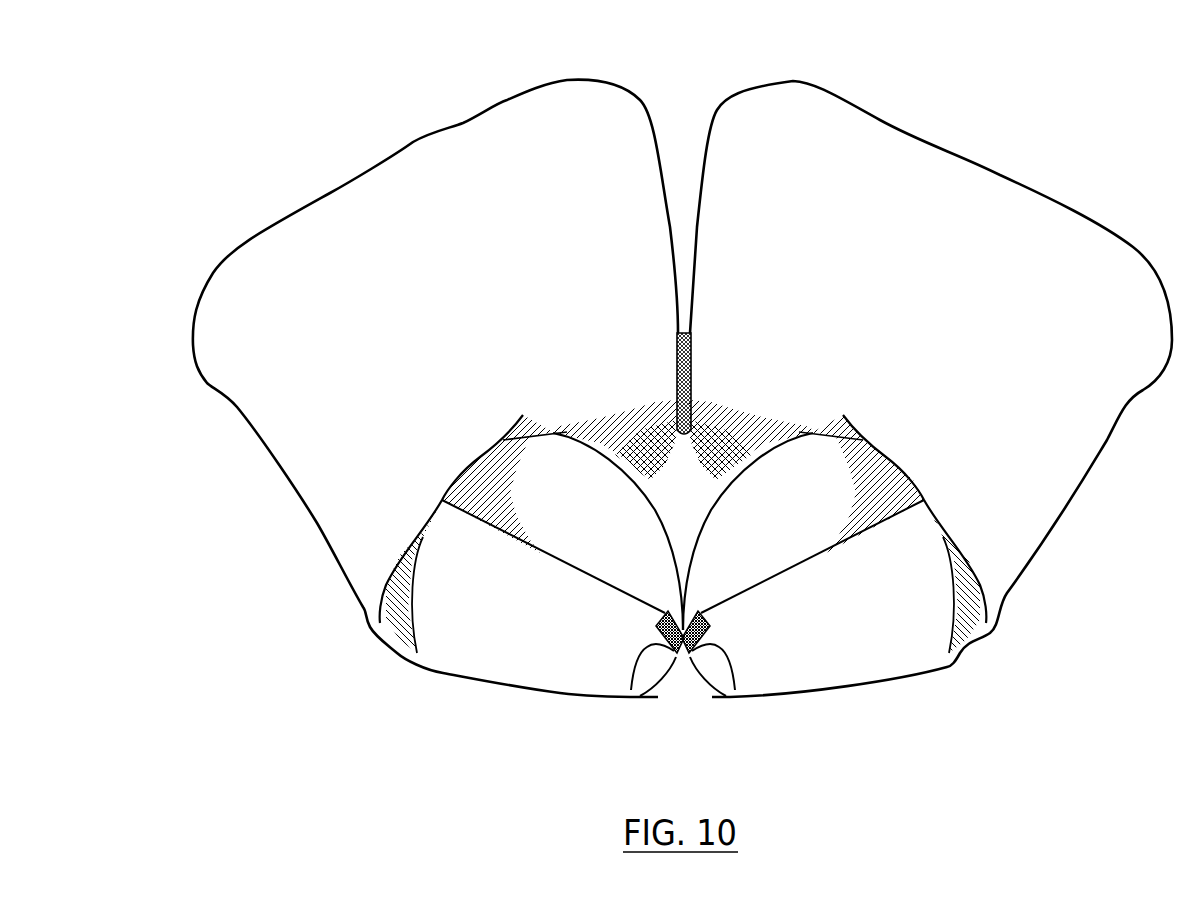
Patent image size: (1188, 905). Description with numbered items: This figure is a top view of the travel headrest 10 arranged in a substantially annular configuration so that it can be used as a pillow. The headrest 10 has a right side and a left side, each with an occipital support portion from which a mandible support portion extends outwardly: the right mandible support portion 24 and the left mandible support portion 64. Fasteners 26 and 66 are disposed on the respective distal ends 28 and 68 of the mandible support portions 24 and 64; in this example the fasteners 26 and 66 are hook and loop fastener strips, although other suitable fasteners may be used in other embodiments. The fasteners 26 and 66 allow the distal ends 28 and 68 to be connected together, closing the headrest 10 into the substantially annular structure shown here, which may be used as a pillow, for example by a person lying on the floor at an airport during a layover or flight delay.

The headrest 10 is at (352, 148).
The mandible support portion 24 is at (442, 625).
The fastener 26 is at (631, 690).
The distal end 28 is at (660, 683).
The mandible support portion 64 is at (902, 633).
The fastener 66 is at (735, 690).
The distal end 68 is at (706, 683).